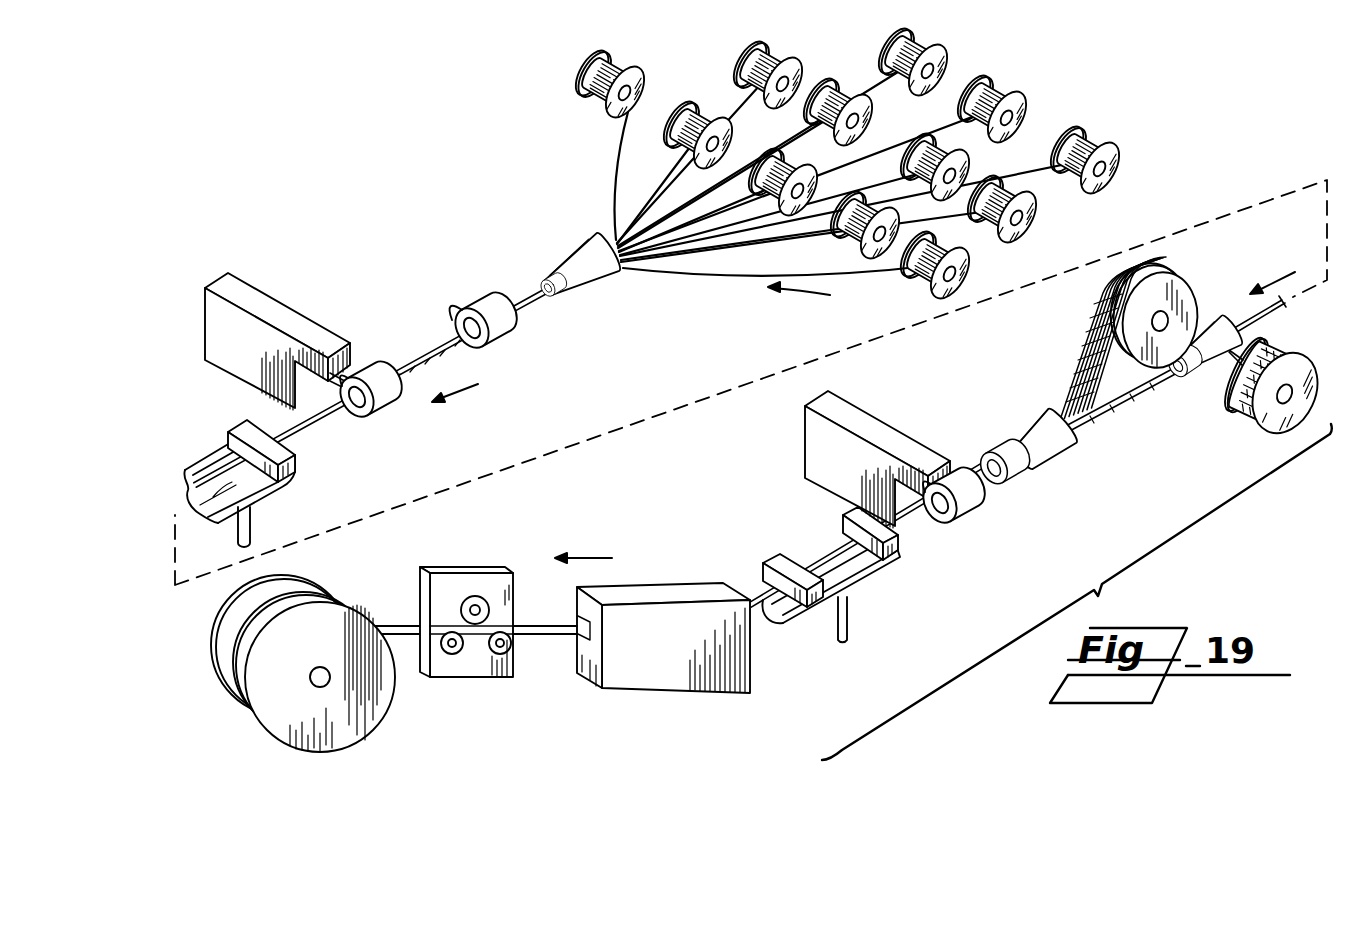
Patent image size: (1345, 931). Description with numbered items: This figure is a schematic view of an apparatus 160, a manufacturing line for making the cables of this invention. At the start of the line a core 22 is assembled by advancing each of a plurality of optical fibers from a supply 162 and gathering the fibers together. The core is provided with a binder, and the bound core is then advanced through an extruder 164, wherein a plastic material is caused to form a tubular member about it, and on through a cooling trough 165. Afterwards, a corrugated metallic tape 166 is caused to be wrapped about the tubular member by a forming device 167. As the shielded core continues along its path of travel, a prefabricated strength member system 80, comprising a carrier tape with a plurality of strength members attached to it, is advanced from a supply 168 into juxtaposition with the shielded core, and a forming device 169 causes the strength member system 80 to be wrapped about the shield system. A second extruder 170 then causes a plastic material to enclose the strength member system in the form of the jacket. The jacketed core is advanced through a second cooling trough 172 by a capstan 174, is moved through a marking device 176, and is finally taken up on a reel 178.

The core 22 is at (535, 311).
The strength member system 80 is at (1082, 370).
The apparatus 160 is at (1077, 592).
The supply 162 is at (640, 77).
The extruder 164 is at (295, 315).
The cooling trough 165 is at (285, 482).
The corrugated metallic tape 166 is at (1240, 397).
The forming device 167 is at (1190, 378).
The supply 168 is at (1185, 289).
The forming device 169 is at (1002, 447).
The extruder 170 is at (887, 427).
The cooling trough 172 is at (872, 580).
The capstan 174 is at (672, 598).
The marking device 176 is at (473, 563).
The reel 178 is at (305, 588).